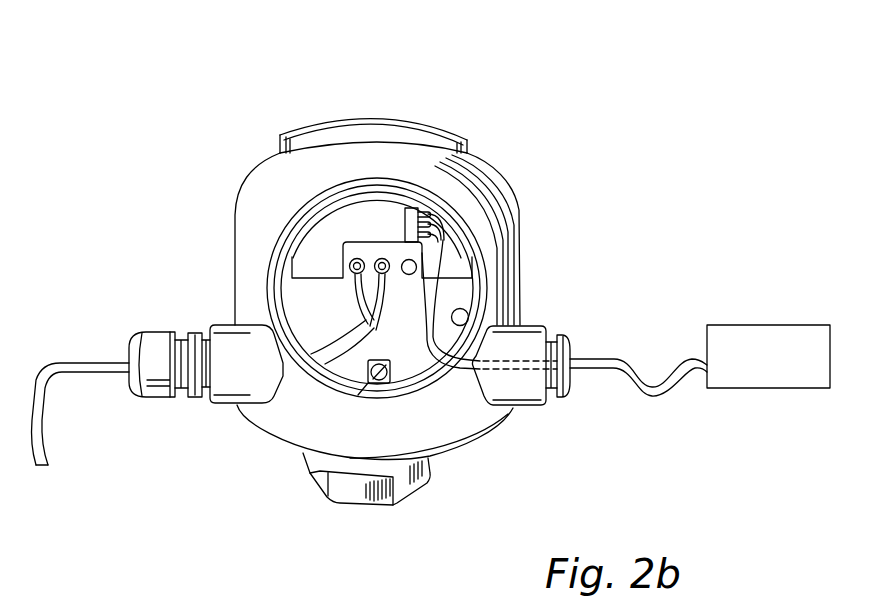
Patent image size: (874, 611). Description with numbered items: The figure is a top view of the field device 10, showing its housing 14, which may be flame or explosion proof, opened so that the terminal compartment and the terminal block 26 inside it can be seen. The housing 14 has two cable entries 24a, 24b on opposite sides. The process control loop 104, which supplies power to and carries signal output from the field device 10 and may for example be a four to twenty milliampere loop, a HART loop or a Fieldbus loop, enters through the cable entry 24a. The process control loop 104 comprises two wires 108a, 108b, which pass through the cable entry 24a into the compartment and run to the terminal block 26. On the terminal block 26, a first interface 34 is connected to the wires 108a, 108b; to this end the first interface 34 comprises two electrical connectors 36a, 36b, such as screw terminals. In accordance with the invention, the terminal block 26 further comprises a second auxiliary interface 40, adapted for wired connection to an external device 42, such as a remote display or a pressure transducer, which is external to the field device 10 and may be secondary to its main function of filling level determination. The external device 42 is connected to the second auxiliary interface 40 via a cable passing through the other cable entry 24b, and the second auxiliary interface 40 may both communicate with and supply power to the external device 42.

The field device 10 is at (492, 101).
The housing 14 is at (497, 181).
The cable entry 24a is at (210, 397).
The cable entry 24b is at (547, 402).
The terminal block 26 is at (313, 268).
The first interface 34 is at (148, 153).
The electrical connector 36a is at (382, 258).
The electrical connector 36b is at (357, 258).
The second auxiliary interface 40 is at (406, 208).
The external device 42 is at (745, 378).
The process control loop 104 is at (90, 374).
The wire 108a is at (381, 286).
The wire 108b is at (381, 286).